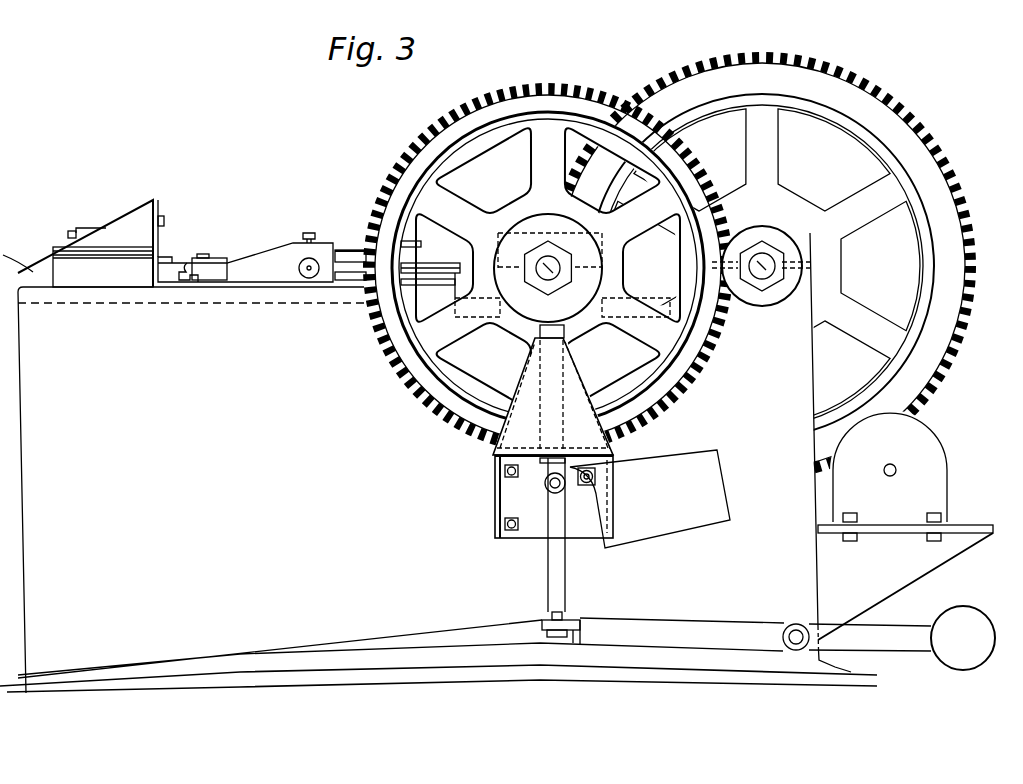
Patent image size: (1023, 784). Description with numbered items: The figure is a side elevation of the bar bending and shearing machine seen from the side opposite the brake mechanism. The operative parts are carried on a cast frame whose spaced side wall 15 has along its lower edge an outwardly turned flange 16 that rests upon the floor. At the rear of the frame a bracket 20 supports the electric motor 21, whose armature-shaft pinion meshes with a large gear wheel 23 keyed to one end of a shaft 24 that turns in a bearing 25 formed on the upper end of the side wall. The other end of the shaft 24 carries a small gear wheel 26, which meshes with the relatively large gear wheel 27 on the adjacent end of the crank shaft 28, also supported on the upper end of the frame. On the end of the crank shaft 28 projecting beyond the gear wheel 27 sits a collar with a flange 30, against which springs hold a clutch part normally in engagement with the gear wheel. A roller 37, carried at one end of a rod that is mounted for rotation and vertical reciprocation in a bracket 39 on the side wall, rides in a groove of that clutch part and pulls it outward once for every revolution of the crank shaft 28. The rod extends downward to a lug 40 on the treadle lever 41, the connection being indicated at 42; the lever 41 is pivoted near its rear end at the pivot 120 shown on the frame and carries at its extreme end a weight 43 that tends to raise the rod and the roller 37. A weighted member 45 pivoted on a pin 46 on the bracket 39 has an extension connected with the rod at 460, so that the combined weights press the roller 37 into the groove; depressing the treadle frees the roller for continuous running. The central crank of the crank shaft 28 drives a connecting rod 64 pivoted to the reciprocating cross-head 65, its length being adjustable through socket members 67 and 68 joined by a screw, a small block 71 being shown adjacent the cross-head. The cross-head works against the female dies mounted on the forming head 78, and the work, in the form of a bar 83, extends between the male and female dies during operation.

The side wall 15 is at (183, 474).
The outwardly turned flange 16 is at (420, 676).
The bracket 20 is at (922, 592).
The electric motor 21 is at (935, 456).
The large gear wheel 23 is at (950, 221).
The shaft 24 is at (772, 268).
The bearing 25 is at (813, 240).
The small gear wheel 26 is at (760, 306).
The large gear wheel 27 is at (692, 386).
The crank shaft 28 is at (553, 272).
The flange 30 is at (552, 268).
The roller 37 is at (527, 303).
The bracket 39 is at (520, 484).
The lug 40 is at (580, 622).
The treadle lever 41 is at (687, 633).
The connection 42 is at (558, 637).
The weight 43 is at (952, 650).
The weighted member 45 is at (725, 469).
The pin 46 is at (597, 479).
The connection 460 is at (558, 492).
The connecting rod 64 is at (430, 258).
The cross-head 65 is at (267, 258).
The socket member 67 is at (450, 272).
The socket member 68 is at (350, 262).
The block 71 is at (210, 258).
The forming head 78 is at (108, 232).
The bar 83 is at (198, 285).
The pivot 120 is at (795, 623).